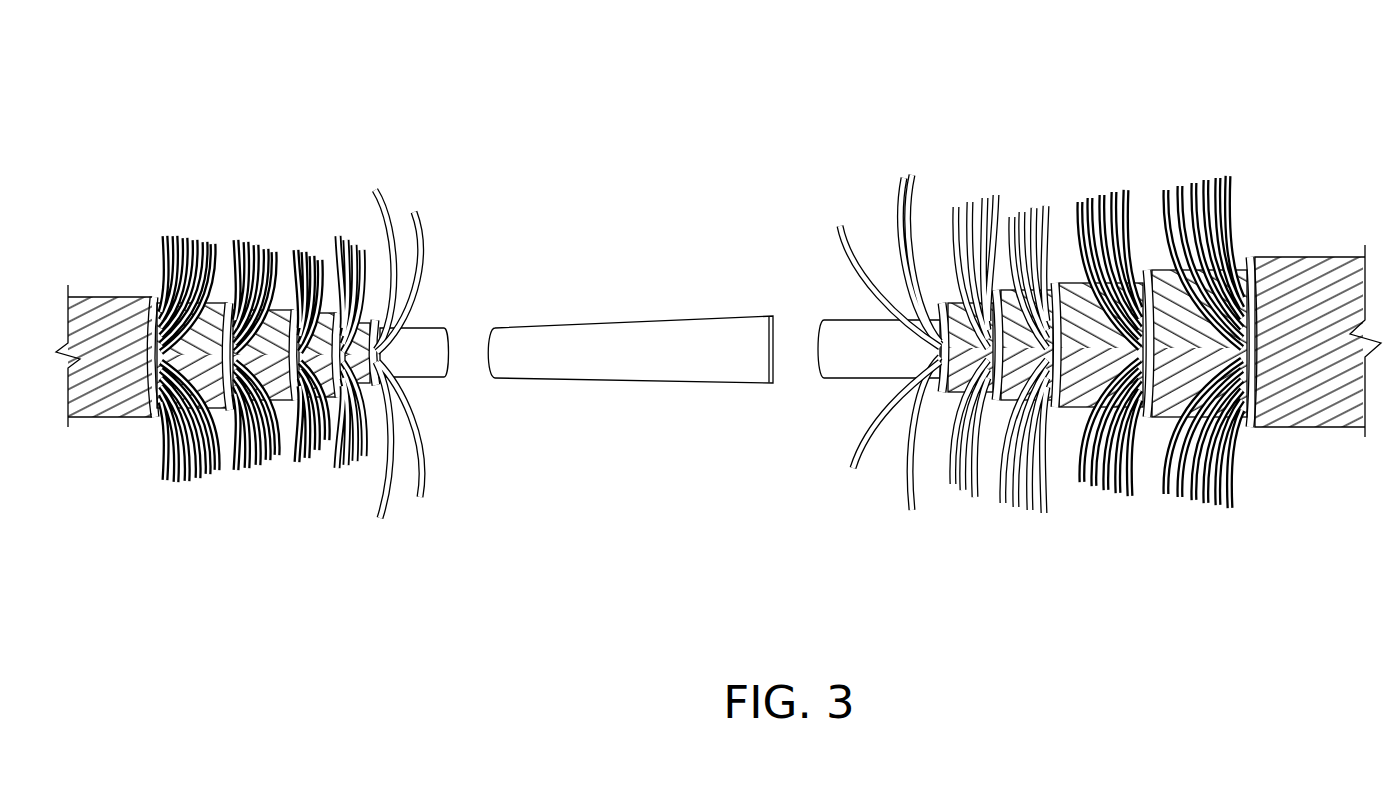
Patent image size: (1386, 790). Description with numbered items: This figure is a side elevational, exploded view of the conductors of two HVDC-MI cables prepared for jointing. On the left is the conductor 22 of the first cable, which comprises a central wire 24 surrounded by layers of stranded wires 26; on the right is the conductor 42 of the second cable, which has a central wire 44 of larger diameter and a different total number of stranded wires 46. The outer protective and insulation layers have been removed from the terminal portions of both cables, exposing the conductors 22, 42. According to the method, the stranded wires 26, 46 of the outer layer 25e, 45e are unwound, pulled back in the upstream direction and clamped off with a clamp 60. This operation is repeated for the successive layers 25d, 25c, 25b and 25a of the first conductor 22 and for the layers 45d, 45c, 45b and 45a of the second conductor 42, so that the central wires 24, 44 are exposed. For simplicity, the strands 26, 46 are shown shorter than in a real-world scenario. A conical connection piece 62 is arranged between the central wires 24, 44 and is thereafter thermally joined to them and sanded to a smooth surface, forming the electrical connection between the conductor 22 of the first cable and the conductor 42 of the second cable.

The conductor 22 is at (213, 172).
The central wire 24 is at (430, 368).
The layer a of stranded wires 25a is at (393, 359).
The layer b of stranded wires 25b is at (327, 440).
The layer c of stranded wires 25c is at (288, 440).
The layer d of stranded wires 25d is at (223, 440).
The outer layer of stranded wires 25e is at (137, 430).
The stranded wires 26 is at (407, 212).
The conductor 42 is at (1234, 66).
The central wire 44 is at (843, 366).
The layer a of stranded wires 45a is at (892, 371).
The layer b of stranded wires 45b is at (1015, 430).
The layer c of stranded wires 45c is at (1073, 430).
The layer d of stranded wires 45d is at (1153, 430).
The outer layer of stranded wires 45e is at (1258, 430).
The stranded wires 46 is at (852, 230).
The clamp 60 is at (155, 299).
The conical connection piece 62 is at (636, 340).